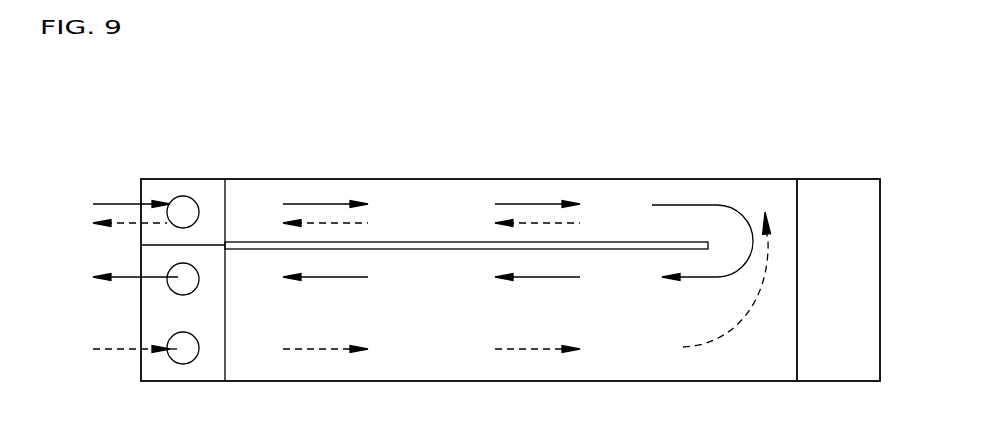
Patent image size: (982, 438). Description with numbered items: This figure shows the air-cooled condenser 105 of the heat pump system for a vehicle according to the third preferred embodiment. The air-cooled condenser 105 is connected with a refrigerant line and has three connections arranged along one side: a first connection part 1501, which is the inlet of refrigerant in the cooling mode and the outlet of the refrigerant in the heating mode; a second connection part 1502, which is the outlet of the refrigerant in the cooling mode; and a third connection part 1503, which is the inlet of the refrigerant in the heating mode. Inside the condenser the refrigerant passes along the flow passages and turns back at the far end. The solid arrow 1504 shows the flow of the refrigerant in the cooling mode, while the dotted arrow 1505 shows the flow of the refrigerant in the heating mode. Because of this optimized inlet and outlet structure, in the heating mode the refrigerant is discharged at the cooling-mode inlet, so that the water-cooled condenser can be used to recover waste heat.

The air-cooled condenser 105 is at (722, 166).
The first connection part 1501 is at (183, 197).
The second connection part 1502 is at (183, 296).
The third connection part 1503 is at (175, 358).
The solid arrow 1504 is at (537, 204).
The dotted arrow 1505 is at (537, 222).